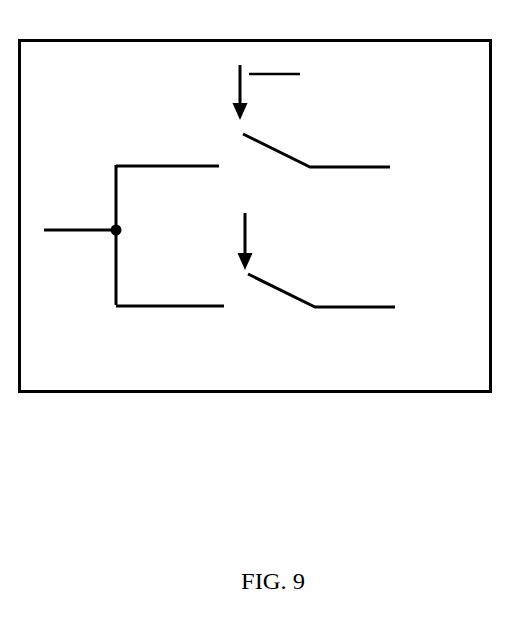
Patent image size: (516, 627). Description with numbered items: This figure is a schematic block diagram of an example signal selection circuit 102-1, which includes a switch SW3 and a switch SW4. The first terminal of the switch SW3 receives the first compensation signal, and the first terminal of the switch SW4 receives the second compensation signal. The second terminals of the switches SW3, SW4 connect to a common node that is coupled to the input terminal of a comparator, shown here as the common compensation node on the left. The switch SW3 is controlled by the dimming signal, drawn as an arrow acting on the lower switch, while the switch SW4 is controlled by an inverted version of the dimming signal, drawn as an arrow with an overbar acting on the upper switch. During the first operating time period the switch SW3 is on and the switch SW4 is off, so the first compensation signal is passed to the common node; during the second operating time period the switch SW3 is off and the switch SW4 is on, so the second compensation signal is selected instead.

The signal selection circuit 102-1 is at (255, 216).
The switch SW3 is at (316, 275).
The switch SW4 is at (311, 131).